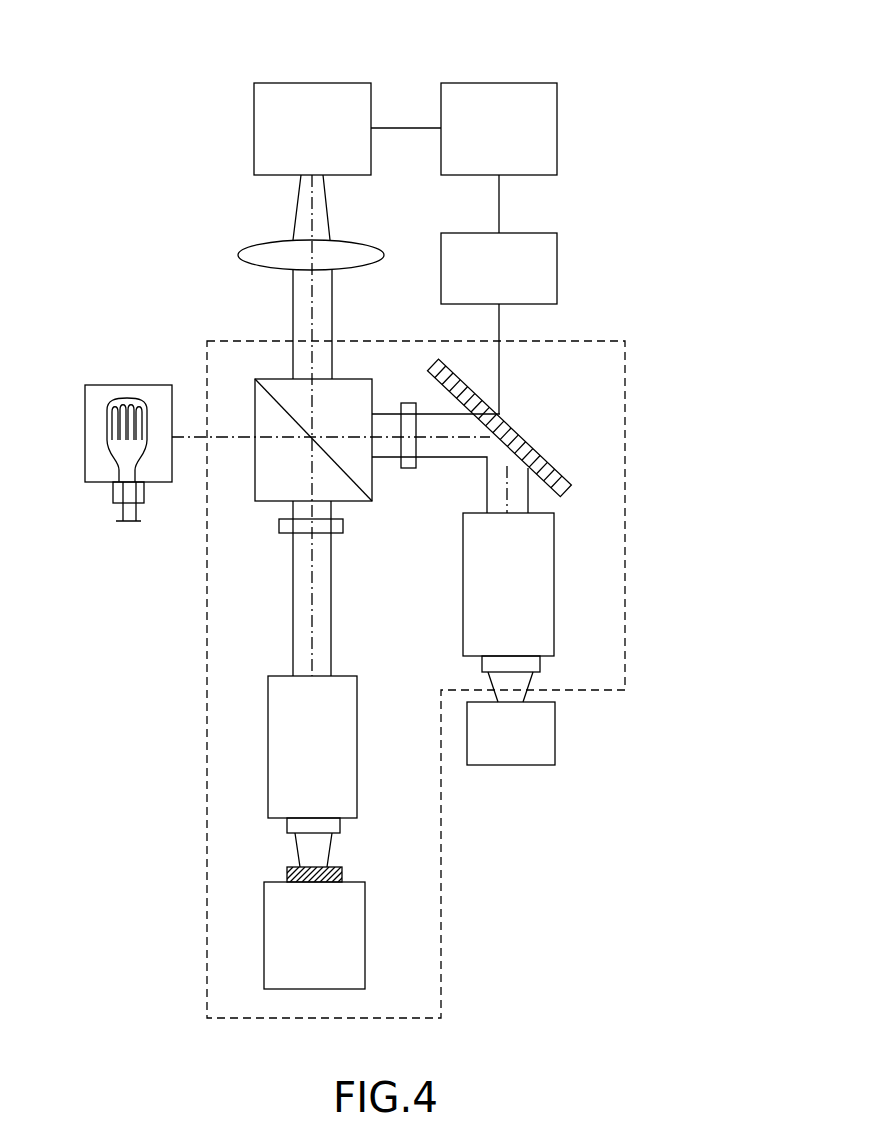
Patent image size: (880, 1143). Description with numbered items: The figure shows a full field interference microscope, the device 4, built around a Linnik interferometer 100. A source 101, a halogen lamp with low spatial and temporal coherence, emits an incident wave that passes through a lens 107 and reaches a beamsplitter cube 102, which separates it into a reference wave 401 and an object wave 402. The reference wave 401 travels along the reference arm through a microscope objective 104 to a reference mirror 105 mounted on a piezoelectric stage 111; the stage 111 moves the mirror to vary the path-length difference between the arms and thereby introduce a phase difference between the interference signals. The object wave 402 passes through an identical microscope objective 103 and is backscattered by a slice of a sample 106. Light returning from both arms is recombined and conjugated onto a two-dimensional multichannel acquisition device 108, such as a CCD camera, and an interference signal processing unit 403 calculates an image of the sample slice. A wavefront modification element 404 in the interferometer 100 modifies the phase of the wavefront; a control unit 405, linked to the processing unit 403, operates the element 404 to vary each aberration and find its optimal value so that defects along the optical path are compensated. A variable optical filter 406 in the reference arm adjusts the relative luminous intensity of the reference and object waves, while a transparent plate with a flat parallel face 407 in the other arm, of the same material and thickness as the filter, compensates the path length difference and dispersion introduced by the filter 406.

The device 4 is at (620, 88).
The Linnik interferometer 100 is at (205, 362).
The source 101 is at (100, 503).
The beamsplitter cube 102 is at (280, 379).
The microscope objective 103 is at (463, 612).
The microscope objective 104 is at (288, 676).
The reference mirror 105 is at (342, 873).
The sample 106 is at (555, 730).
The lens 107 is at (238, 257).
The two-dimensional multichannel acquisition device 108 is at (278, 83).
The piezoelectric stage 111 is at (264, 937).
The reference wave 401 is at (332, 555).
The object wave 402 is at (460, 456).
The interference signal processing unit 403 is at (498, 83).
The wavefront modification element 404 is at (558, 468).
The control unit 405 is at (557, 277).
The variable optical filter 406 is at (280, 523).
The transparent plate with a flat parallel face 407 is at (406, 403).